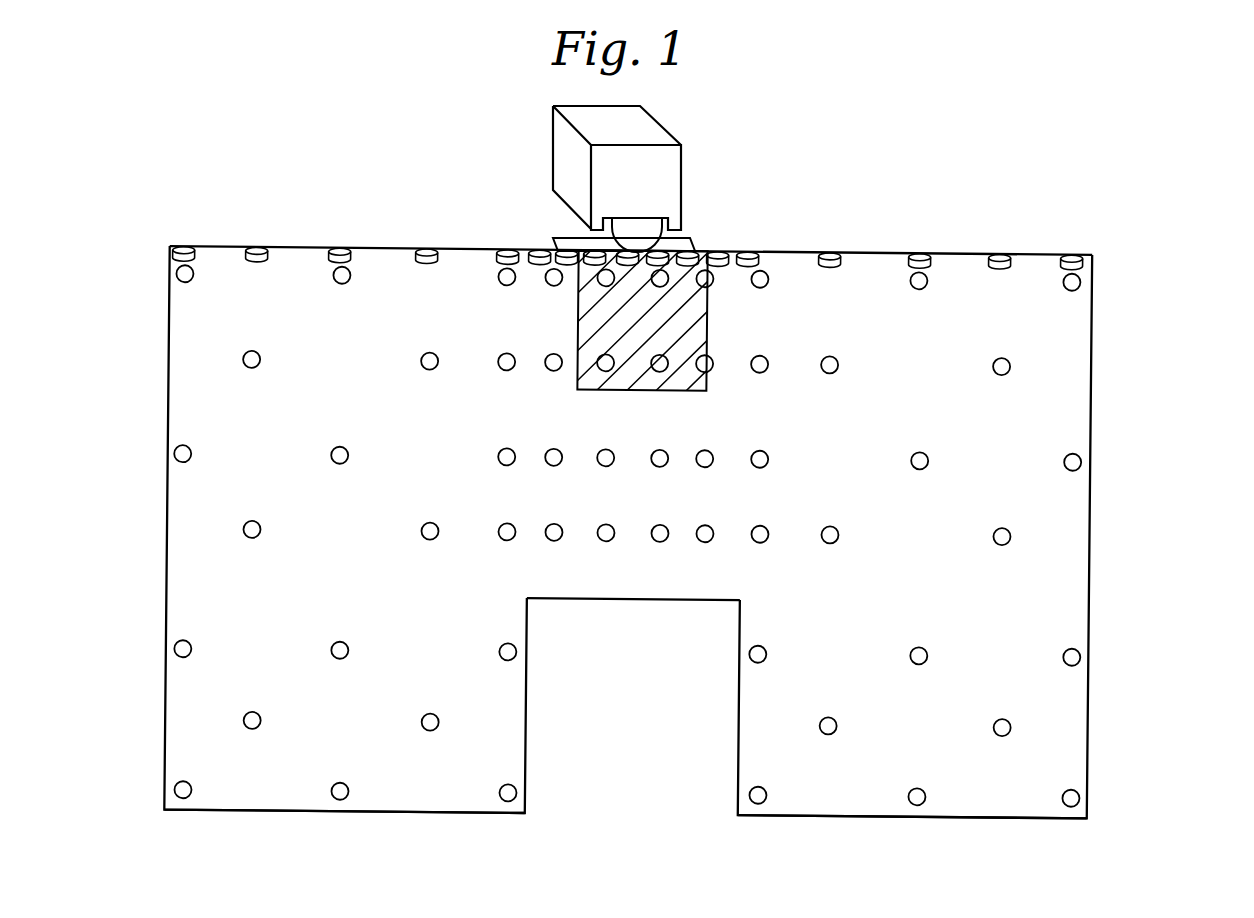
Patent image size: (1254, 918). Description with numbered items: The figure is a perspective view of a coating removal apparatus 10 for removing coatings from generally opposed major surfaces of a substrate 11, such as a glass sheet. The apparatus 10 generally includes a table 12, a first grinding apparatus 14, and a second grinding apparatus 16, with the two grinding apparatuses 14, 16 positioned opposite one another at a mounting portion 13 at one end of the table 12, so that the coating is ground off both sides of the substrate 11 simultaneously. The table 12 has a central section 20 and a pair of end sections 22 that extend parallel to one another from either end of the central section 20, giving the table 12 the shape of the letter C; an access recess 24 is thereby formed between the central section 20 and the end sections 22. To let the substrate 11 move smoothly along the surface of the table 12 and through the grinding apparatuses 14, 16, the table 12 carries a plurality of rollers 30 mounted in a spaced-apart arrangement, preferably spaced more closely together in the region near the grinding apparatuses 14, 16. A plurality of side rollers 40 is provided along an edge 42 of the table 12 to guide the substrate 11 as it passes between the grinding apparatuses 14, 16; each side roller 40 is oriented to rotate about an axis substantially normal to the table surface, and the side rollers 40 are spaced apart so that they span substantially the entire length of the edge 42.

The coating removal apparatus 10 is at (222, 133).
The substrate 11 is at (705, 332).
The table 12 is at (182, 583).
The mounting portion 13 is at (517, 240).
The first grinding apparatus 14 is at (672, 173).
The second grinding apparatus 16 is at (686, 246).
The central section 20 is at (598, 585).
The end sections 22 is at (257, 798).
The access recess 24 is at (618, 787).
The rollers 30 is at (243, 360).
The side rollers 40 is at (922, 256).
The edge 42 is at (1050, 256).